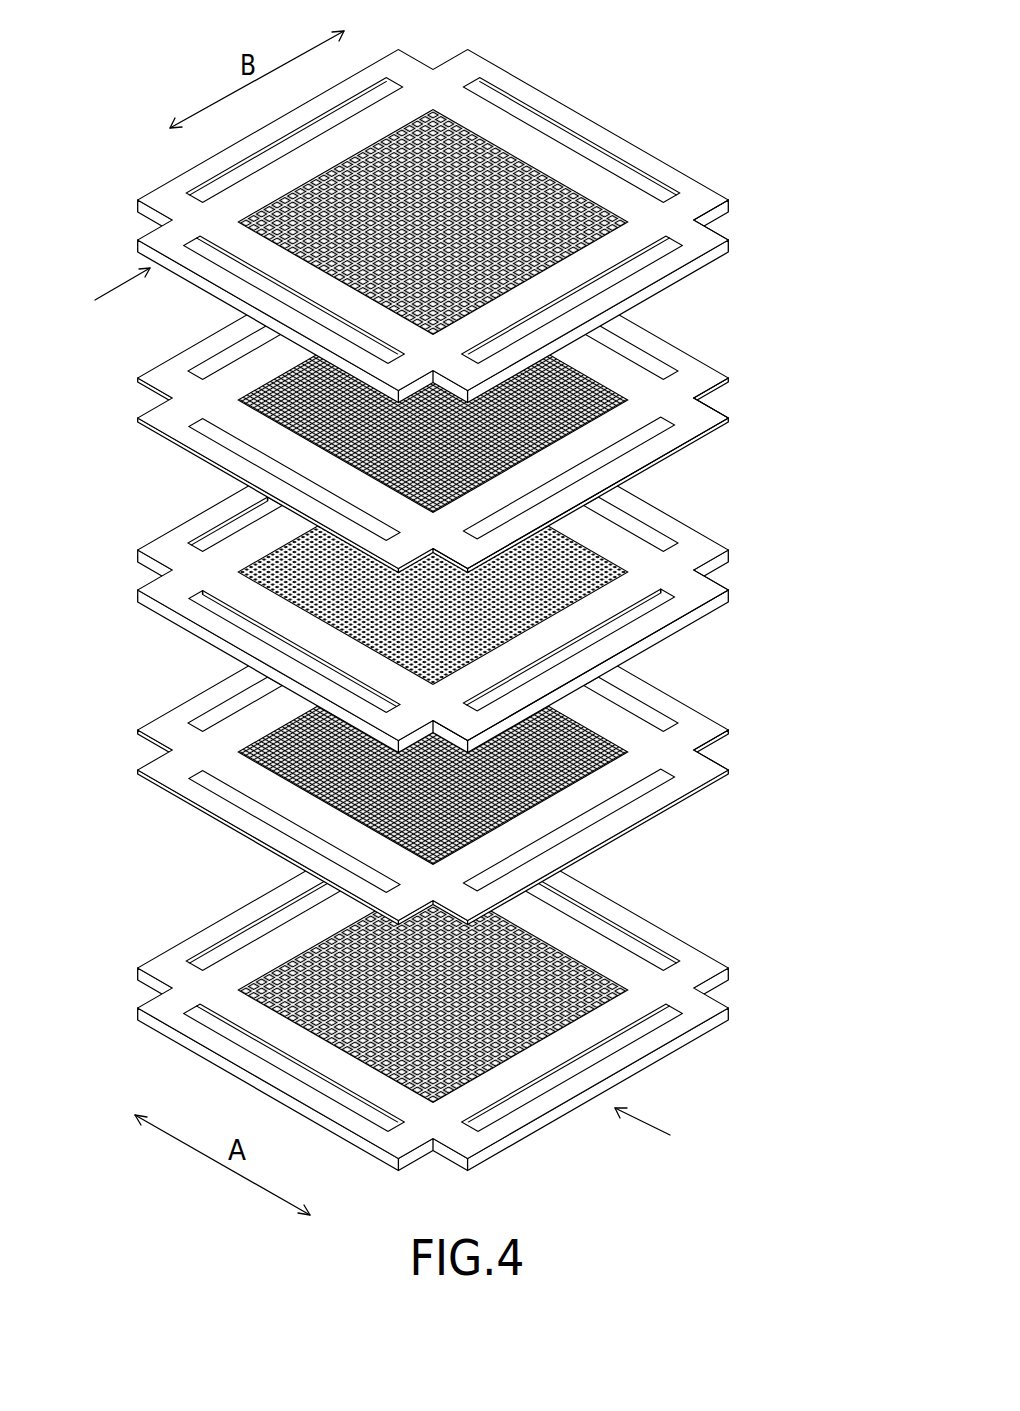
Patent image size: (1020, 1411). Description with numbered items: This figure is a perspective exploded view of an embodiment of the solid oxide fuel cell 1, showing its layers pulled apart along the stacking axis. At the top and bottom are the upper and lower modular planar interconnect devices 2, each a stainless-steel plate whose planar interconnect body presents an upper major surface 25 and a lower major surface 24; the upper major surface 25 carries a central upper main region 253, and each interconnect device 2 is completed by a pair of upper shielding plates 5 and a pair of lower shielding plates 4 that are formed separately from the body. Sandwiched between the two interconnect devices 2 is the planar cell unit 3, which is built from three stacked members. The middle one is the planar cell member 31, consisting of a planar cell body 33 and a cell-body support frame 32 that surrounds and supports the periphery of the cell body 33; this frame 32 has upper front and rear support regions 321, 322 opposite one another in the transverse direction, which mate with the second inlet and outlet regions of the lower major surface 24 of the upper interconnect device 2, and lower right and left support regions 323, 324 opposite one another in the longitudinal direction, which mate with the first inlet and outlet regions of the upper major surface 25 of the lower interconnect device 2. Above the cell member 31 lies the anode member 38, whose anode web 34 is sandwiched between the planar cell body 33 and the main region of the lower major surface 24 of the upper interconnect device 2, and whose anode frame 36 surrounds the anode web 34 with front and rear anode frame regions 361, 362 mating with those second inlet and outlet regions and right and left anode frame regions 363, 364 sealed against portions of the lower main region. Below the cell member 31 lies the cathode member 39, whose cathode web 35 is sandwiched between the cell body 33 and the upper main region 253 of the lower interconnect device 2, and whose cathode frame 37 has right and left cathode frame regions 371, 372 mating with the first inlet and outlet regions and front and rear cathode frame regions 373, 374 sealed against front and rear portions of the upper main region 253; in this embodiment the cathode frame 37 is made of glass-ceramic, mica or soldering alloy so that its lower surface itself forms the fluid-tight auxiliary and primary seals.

The solid oxide fuel cell 1 is at (724, 69).
The modular planar interconnect device 2 is at (736, 172).
The lower major surface 24 is at (705, 268).
The upper major surface 25 is at (690, 195).
The upper main region 253 is at (531, 164).
The planar cell unit 3 is at (831, 317).
The lower shielding plate 4 is at (215, 262).
The upper shielding plate 5 is at (265, 950).
The planar cell member 31 is at (741, 546).
The cell-body support frame 32 is at (635, 502).
The planar cell body 33 is at (570, 563).
The upper front support region 321 is at (245, 598).
The upper rear support region 322 is at (640, 555).
The lower right support region 323 is at (567, 625).
The lower left support region 324 is at (240, 545).
The anode web 34 is at (690, 380).
The anode frame 36 is at (700, 395).
The anode member 38 is at (725, 403).
The front anode frame region 361 is at (240, 408).
The rear anode frame region 362 is at (590, 395).
The right anode frame region 363 is at (640, 412).
The left anode frame region 364 is at (238, 378).
The cathode web 35 is at (580, 740).
The cathode frame 37 is at (693, 735).
The cathode member 39 is at (733, 790).
The right cathode frame region 371 is at (625, 775).
The left cathode frame region 372 is at (240, 750).
The front cathode frame region 373 is at (245, 775).
The rear cathode frame region 374 is at (640, 740).